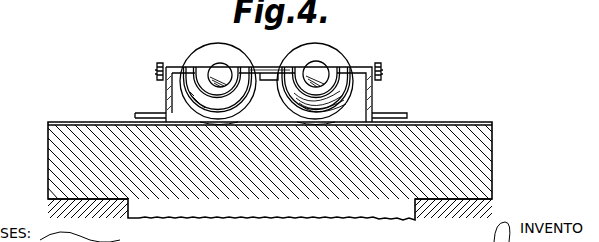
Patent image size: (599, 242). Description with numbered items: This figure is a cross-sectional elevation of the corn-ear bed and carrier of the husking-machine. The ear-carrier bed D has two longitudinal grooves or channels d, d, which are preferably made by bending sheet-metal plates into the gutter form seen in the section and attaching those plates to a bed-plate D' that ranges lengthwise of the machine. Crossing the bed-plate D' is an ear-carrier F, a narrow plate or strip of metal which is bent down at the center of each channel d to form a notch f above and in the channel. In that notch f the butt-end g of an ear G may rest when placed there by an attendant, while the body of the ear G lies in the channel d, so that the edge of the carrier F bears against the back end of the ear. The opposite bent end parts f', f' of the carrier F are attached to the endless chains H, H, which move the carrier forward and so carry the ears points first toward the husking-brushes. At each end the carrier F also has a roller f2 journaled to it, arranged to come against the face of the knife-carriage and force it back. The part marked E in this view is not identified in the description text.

The bed-plate D' is at (270, 171).
The endless chains H is at (135, 113).
The longitudinal grooves or channels d is at (219, 126).
The ear-carrier F is at (184, 67).
The ear-carrier bed D is at (271, 95).
The web E is at (269, 72).
The notch f is at (267, 89).
The ear G is at (236, 48).
The butt-end g is at (318, 76).
The bent end parts f' is at (271, 105).
The rollers f2 is at (156, 72).